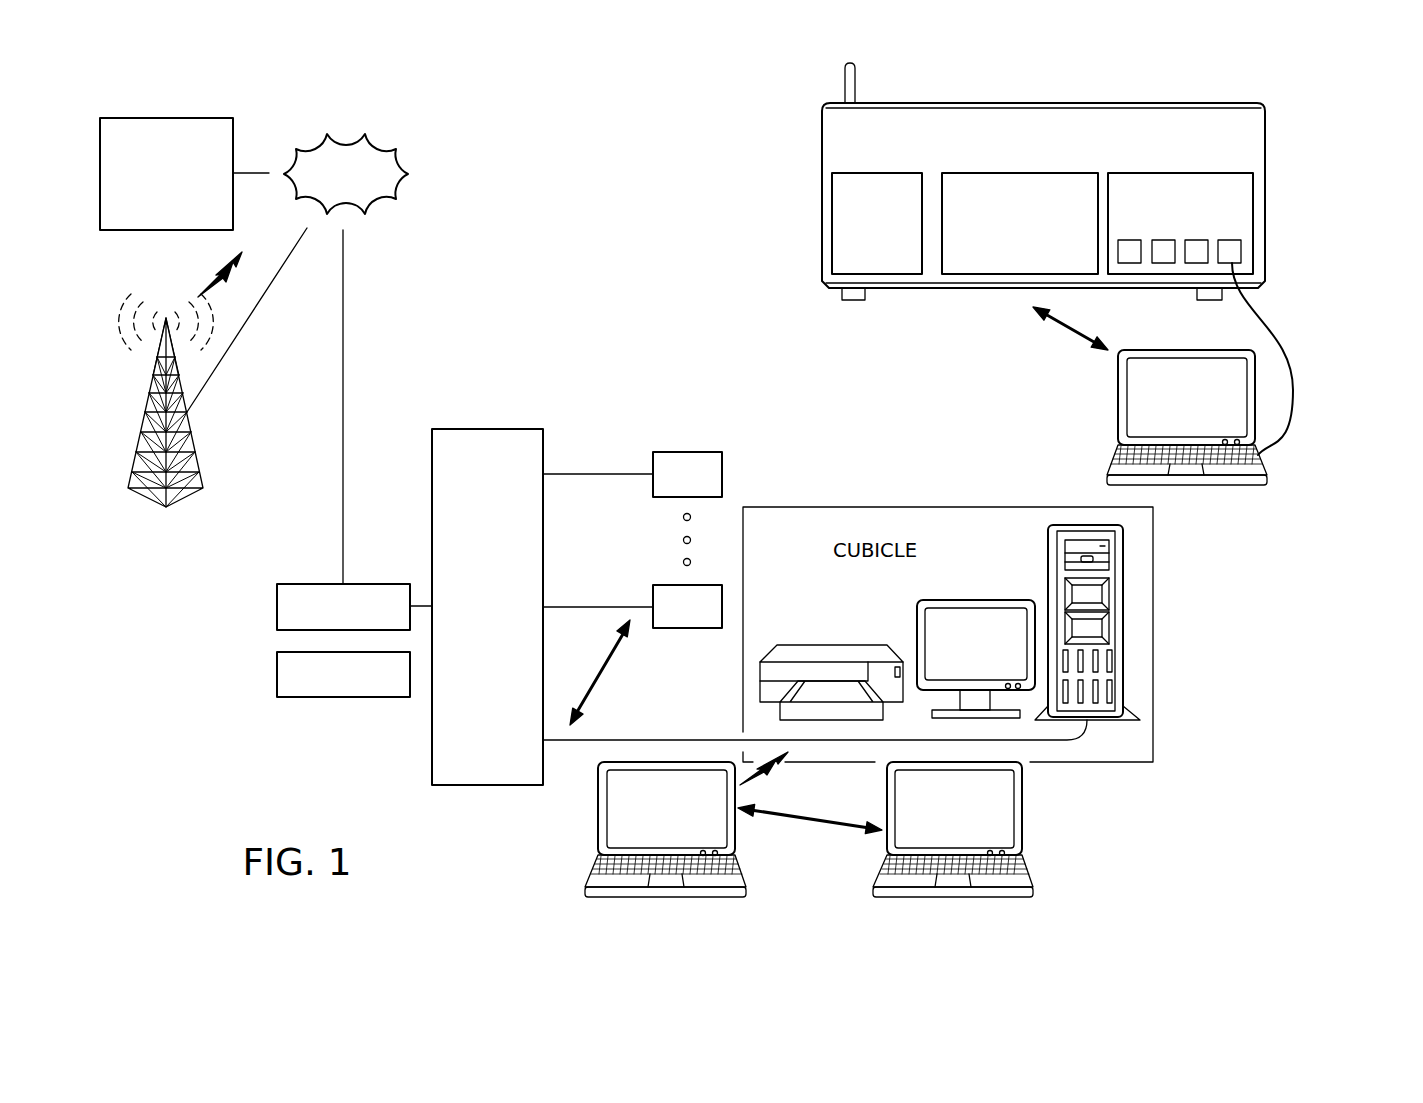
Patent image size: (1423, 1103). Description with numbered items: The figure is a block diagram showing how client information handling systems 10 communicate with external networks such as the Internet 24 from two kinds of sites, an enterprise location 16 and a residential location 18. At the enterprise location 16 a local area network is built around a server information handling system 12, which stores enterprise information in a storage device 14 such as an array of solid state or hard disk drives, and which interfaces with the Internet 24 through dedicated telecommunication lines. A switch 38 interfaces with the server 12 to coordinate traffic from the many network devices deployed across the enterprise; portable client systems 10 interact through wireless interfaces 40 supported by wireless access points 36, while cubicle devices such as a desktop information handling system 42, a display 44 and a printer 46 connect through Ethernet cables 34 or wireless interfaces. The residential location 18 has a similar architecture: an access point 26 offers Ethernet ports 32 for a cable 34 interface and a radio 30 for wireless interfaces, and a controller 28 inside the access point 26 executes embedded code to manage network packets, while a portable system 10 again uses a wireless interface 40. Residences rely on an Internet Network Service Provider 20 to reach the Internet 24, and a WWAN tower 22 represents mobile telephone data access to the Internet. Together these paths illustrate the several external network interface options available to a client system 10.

The client information handling system 10 is at (1268, 468).
The server information handling system 12 is at (277, 618).
The storage device 14 is at (277, 675).
The enterprise location 16 is at (565, 395).
The residential location 18 is at (1318, 172).
The Internet Network Service Provider 20 is at (155, 117).
The WWAN tower 22 is at (150, 398).
The Internet 24 is at (310, 123).
The access point 26 is at (1128, 153).
The controller 28 is at (1006, 257).
The radio 30 is at (876, 173).
The Ethernet ports 32 is at (1180, 173).
The cable 34 is at (585, 742).
The wireless access point 36 is at (688, 452).
The switch 38 is at (472, 638).
The wireless interface 40 is at (618, 648).
The desktop information handling system 42 is at (1123, 650).
The display 44 is at (977, 600).
The printer 46 is at (832, 645).